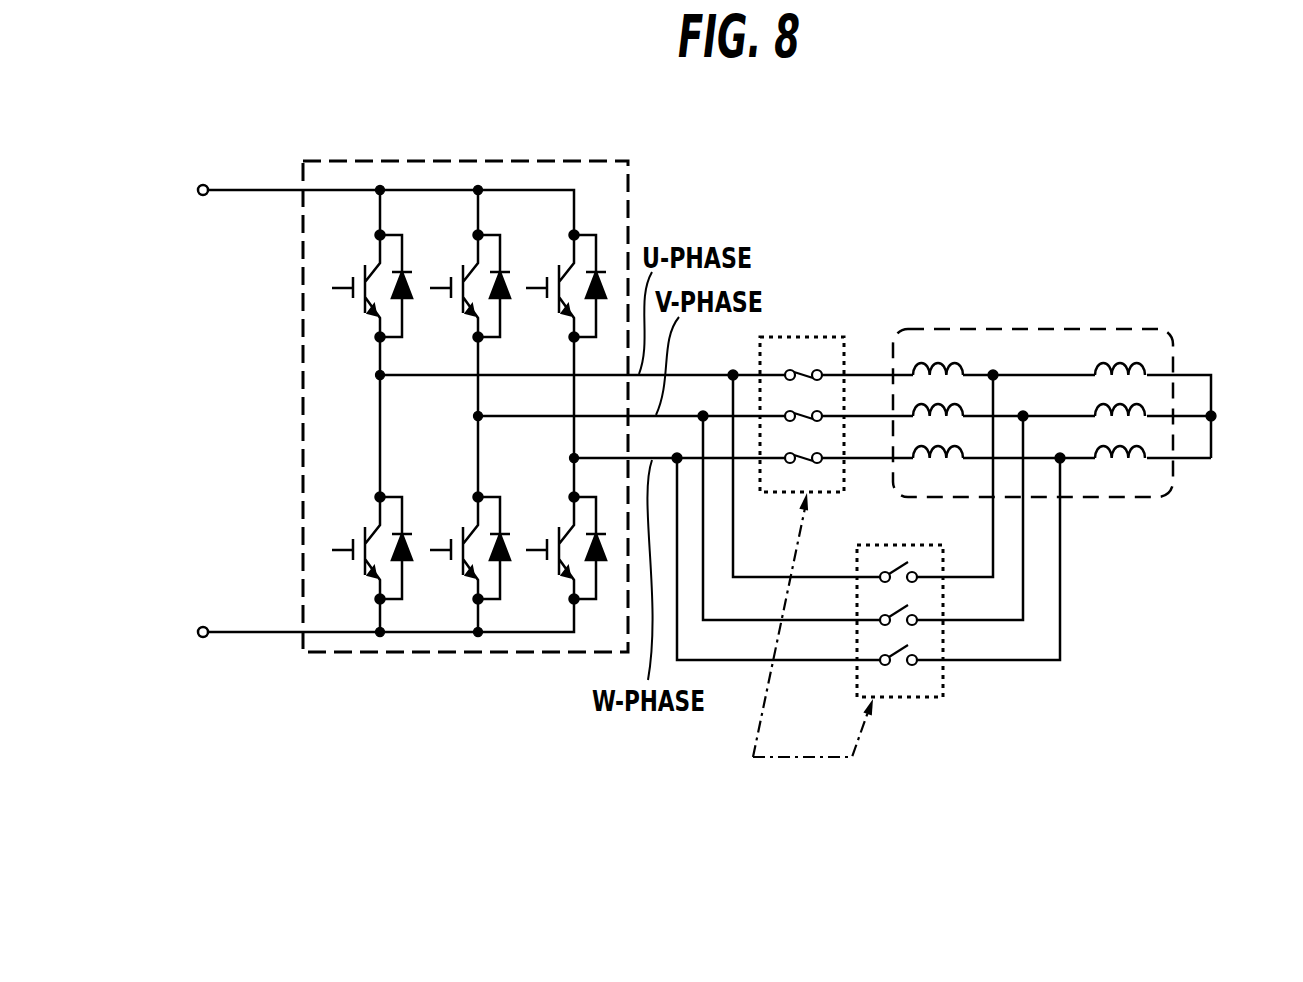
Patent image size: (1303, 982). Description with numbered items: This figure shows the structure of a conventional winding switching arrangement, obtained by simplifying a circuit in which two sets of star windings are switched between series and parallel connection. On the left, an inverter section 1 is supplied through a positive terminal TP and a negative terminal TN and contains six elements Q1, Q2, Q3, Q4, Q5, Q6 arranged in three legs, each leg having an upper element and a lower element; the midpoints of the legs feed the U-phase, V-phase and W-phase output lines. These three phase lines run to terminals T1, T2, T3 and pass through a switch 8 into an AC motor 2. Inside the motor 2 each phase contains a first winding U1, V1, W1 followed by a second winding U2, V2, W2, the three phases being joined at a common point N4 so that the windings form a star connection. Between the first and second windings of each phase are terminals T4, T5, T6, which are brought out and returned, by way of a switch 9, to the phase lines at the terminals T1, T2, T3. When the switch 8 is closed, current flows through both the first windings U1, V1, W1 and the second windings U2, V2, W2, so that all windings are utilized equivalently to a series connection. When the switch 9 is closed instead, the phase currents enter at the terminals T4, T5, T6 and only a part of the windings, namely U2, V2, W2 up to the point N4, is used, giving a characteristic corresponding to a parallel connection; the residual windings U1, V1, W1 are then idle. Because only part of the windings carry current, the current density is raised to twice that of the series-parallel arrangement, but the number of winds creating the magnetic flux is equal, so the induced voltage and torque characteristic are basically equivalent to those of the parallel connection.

The inverter section 1 is at (344, 160).
The AC motor 2 is at (1017, 328).
The switch 8 is at (800, 336).
The switch 9 is at (944, 696).
The positive DC terminal TP is at (203, 185).
The negative DC terminal TN is at (203, 637).
The switching element (IGBT) Q1 is at (372, 280).
The switching element (IGBT) Q2 is at (470, 280).
The switching element (IGBT) Q3 is at (566, 280).
The switching element (IGBT) Q4 is at (372, 542).
The switching element (IGBT) Q5 is at (470, 542).
The switching element (IGBT) Q6 is at (566, 542).
The motor terminal T1 is at (728, 360).
The motor terminal T2 is at (701, 401).
The motor terminal T3 is at (678, 442).
The motor terminal T4 is at (1005, 362).
The motor terminal T5 is at (1038, 406).
The motor terminal T6 is at (1063, 461).
The U-phase winding 1 U1 is at (938, 353).
The V-phase winding 1 V1 is at (950, 398).
The W-phase winding 1 W1 is at (938, 467).
The U-phase winding 2 U2 is at (1120, 353).
The V-phase winding 2 V2 is at (1132, 398).
The W-phase winding 2 W2 is at (1120, 467).
The neutral point N4 is at (1215, 416).